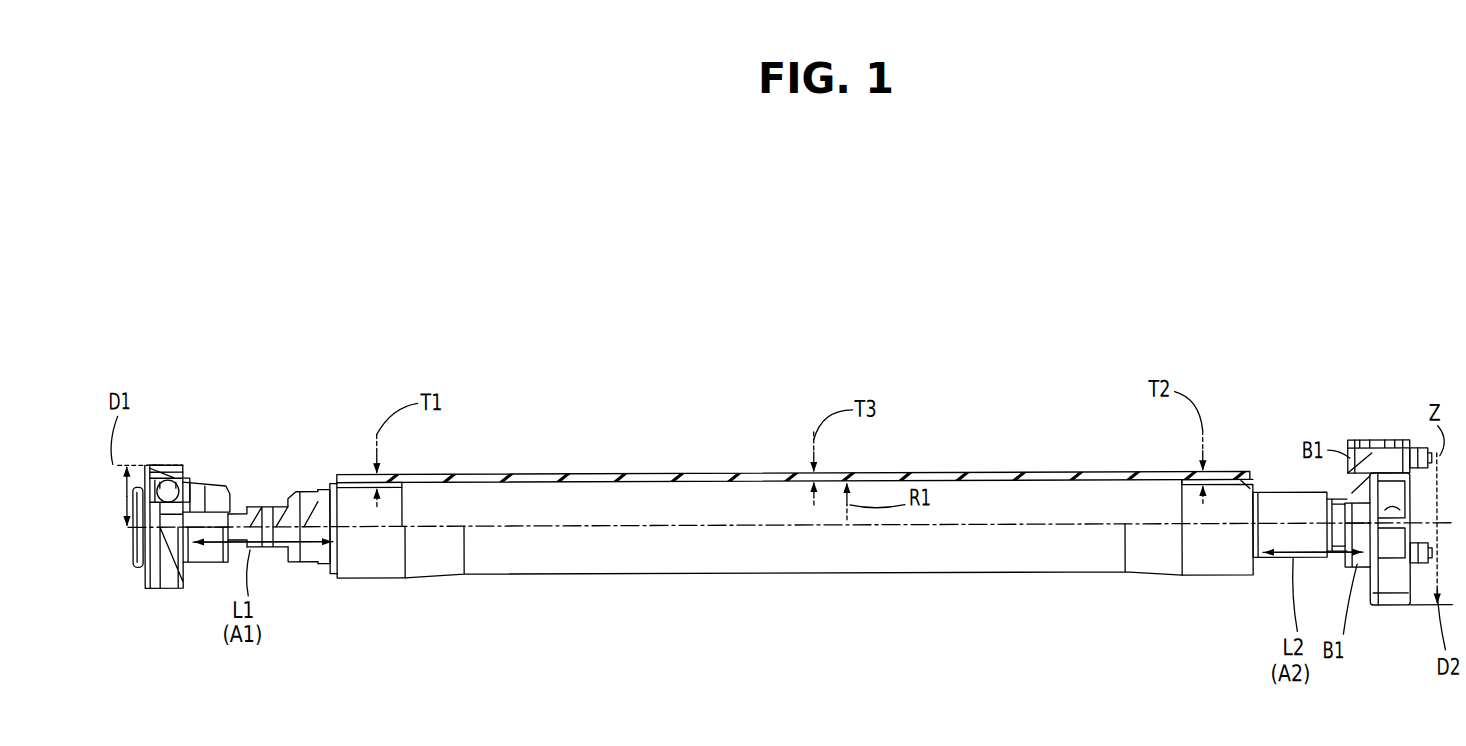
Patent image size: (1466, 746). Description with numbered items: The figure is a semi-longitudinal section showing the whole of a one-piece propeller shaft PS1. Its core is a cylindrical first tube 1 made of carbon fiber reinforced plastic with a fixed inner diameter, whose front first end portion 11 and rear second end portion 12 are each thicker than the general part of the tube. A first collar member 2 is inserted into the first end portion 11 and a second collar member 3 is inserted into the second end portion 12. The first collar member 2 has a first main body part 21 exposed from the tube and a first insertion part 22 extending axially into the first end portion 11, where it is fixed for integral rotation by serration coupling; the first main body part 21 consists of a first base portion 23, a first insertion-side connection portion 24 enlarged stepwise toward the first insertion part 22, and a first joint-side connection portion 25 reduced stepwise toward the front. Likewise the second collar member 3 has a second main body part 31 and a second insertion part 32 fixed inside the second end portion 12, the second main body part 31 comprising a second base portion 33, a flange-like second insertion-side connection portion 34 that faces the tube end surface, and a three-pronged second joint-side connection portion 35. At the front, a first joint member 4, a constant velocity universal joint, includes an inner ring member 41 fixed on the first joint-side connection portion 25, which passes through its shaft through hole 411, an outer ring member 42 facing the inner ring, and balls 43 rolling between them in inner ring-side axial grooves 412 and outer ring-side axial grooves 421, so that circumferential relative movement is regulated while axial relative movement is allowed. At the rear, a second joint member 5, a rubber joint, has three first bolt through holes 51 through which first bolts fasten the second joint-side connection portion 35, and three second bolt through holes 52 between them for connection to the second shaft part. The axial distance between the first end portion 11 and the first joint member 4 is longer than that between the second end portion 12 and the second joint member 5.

The first tube 1 is at (838, 576).
The first collar member 2 is at (256, 510).
The second collar member 3 is at (1278, 568).
The first joint member 4 is at (160, 530).
The second joint member 5 is at (1339, 517).
The first end portion 11 is at (360, 578).
The second end portion 12 is at (1213, 578).
The first main body part 21 is at (275, 449).
The first insertion part 22 is at (346, 478).
The first base portion 23 is at (300, 500).
The first insertion-side connection portion 24 is at (326, 487).
The first joint-side connection portion 25 is at (247, 510).
The second main body part 31 is at (1309, 438).
The second insertion part 32 is at (1242, 488).
The second base portion 33 is at (1297, 495).
The second insertion-side connection portion 34 is at (1262, 495).
The second joint-side connection portion 35 is at (1358, 448).
The inner ring member 41 is at (182, 584).
The outer ring member 42 is at (168, 458).
The balls 43 is at (184, 472).
The first bolt through holes 51 is at (1380, 440).
The second bolt through holes 52 is at (1378, 609).
The shaft through hole 411 is at (193, 480).
The inner ring-side axial grooves 412 is at (140, 576).
The outer ring-side axial grooves 421 is at (157, 470).
The propeller shaft PS1 is at (757, 458).